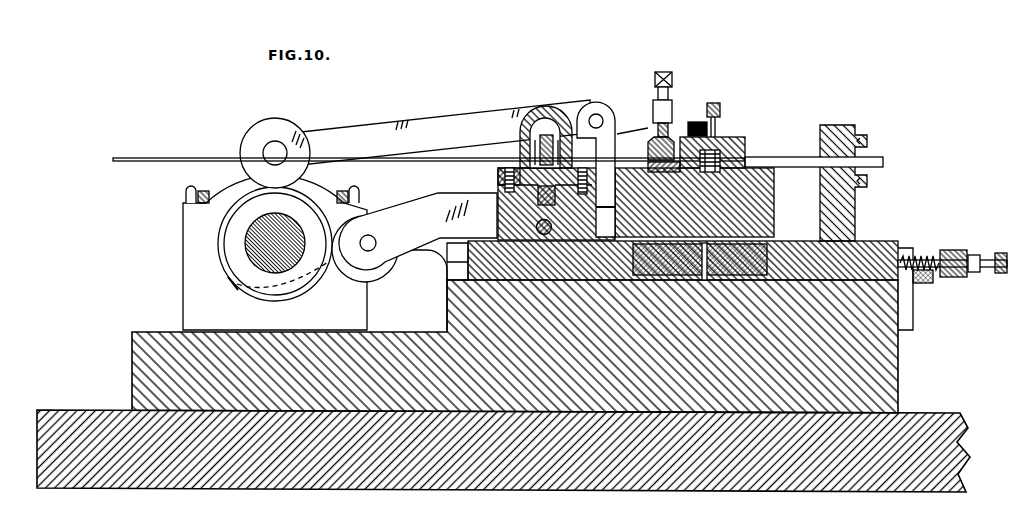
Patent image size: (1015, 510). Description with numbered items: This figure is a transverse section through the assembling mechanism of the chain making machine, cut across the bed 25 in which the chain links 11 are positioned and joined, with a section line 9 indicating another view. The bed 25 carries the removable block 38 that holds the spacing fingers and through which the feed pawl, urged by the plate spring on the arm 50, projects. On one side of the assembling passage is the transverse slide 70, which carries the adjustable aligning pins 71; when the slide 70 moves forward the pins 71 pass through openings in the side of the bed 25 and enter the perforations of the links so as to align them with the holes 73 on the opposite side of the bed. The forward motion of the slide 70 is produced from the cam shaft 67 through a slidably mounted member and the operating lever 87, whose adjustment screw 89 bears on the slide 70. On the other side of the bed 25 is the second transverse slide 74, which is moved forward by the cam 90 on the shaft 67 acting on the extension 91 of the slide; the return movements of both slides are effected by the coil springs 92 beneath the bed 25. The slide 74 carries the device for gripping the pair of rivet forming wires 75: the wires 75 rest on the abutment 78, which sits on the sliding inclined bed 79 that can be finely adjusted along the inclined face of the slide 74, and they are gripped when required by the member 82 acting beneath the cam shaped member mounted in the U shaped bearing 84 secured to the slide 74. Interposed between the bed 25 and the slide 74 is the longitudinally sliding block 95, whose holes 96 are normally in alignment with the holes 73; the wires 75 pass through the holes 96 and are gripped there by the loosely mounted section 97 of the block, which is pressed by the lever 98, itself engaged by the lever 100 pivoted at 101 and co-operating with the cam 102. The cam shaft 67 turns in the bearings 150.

The section line of FIG. 9 is at (545, 104).
The chain links 11 is at (743, 140).
The bed 25 is at (755, 200).
The block 38 is at (712, 150).
The arm 50 is at (717, 103).
The shaft 67 is at (276, 233).
The slide 70 is at (840, 218).
The aligning pins 71 is at (797, 157).
The holes 73 is at (718, 136).
The second transverse slide 74 is at (538, 194).
The rivet forming wires 75 is at (326, 137).
The abutment 78 is at (500, 175).
The sliding inclined bed 79 is at (538, 228).
The gripping member 82 is at (538, 145).
The U shaped bearing 84 is at (540, 112).
The operating lever 87 is at (955, 275).
The adjustment screw 89 is at (990, 250).
The cam 90 is at (232, 278).
The extension 91 is at (413, 245).
The coil springs 92 is at (705, 280).
The longitudinally sliding block 95 is at (656, 165).
The holes 96 is at (667, 172).
The loosely mounted section 97 is at (676, 152).
The lever 98 is at (637, 122).
The lever 100 is at (448, 128).
The pivot 101 is at (594, 115).
The cam 102 is at (308, 282).
The bearings 150 is at (193, 258).